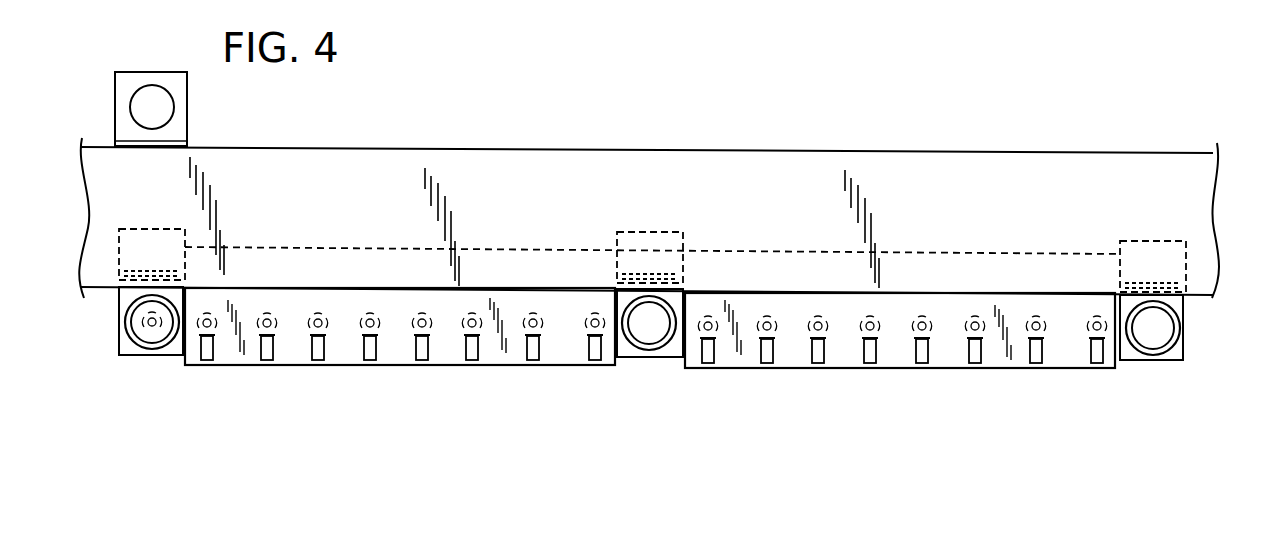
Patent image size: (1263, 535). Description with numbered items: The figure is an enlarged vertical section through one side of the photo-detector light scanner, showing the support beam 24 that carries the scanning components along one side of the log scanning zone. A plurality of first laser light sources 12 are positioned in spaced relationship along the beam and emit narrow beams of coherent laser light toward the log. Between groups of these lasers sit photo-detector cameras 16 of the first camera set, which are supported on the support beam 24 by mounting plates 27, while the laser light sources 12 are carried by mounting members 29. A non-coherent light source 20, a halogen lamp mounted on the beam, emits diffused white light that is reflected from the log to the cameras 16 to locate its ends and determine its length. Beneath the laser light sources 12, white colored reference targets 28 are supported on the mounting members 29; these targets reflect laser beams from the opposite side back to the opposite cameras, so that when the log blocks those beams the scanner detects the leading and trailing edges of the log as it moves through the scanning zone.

The first laser light sources 12 is at (420, 316).
The first set of photo-detector cameras 16 is at (155, 357).
The non-coherent light sources 20 is at (188, 102).
The support beam 24 is at (527, 163).
The mounting plates 27 is at (140, 357).
The reference targets 28 is at (370, 362).
The mounting members 29 is at (482, 247).